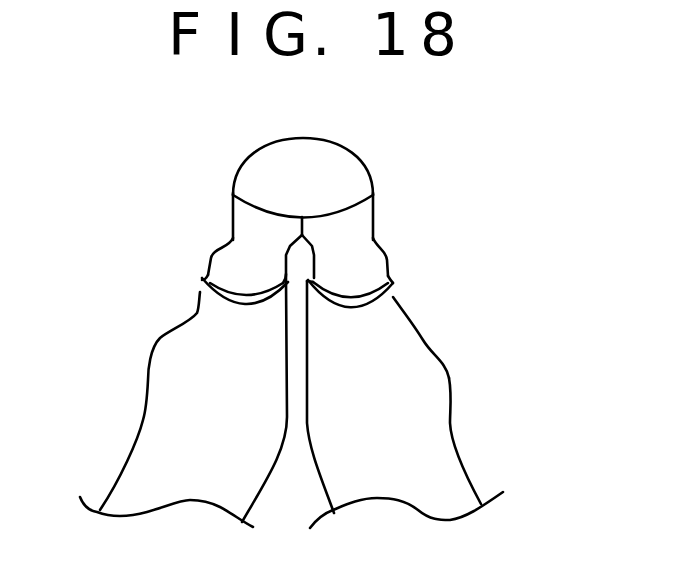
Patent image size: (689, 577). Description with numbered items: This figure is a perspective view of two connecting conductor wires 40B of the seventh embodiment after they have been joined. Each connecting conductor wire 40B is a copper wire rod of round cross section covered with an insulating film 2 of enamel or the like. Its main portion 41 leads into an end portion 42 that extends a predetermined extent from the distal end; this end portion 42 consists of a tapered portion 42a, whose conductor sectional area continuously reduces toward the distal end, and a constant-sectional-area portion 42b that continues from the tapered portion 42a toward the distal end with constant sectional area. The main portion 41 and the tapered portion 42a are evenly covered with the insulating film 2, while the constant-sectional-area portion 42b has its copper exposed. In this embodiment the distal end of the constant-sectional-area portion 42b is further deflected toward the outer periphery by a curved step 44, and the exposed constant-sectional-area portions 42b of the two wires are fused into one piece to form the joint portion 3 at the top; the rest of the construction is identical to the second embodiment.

The joint portion 3 is at (258, 158).
The curved step 44 is at (220, 246).
The insulating film 2 is at (167, 358).
The connecting conductor wire 40B is at (140, 380).
The end portion 42 is at (511, 281).
The tapered portion 42a is at (465, 354).
The constant-sectional-area portion 42b is at (400, 173).
The main portion 41 is at (492, 484).